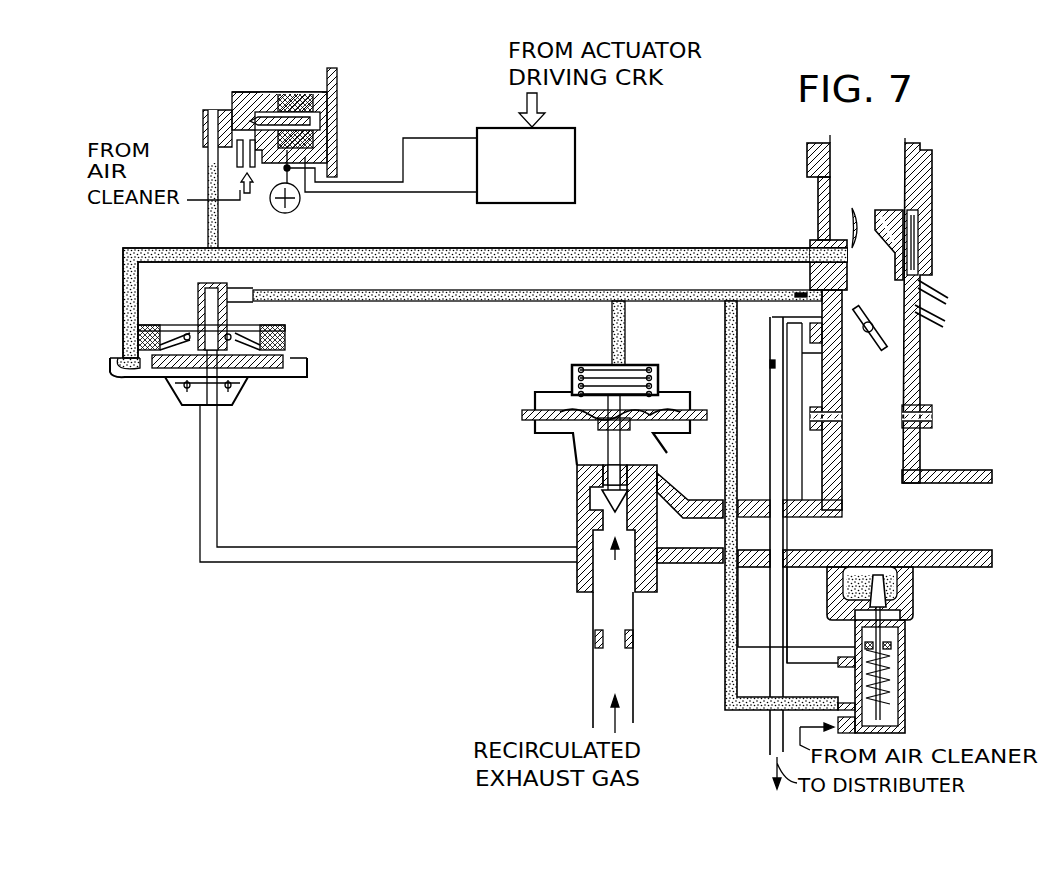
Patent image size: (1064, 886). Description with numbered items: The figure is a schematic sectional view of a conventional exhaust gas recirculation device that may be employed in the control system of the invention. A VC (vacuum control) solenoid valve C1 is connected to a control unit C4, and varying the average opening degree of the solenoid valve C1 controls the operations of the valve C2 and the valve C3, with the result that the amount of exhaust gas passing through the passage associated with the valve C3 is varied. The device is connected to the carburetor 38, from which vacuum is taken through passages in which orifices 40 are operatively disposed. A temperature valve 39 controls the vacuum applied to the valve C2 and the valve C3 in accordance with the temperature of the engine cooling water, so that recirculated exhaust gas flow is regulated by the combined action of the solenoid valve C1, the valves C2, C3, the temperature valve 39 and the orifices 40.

The VC (vacuum control) solenoid valve C1 is at (257, 92).
The valve C2 is at (290, 353).
The valve C3 is at (570, 377).
The control unit C4 is at (487, 128).
The carburetor 38 is at (928, 148).
The temperature valve 39 is at (902, 663).
The orifices 40 is at (797, 292).